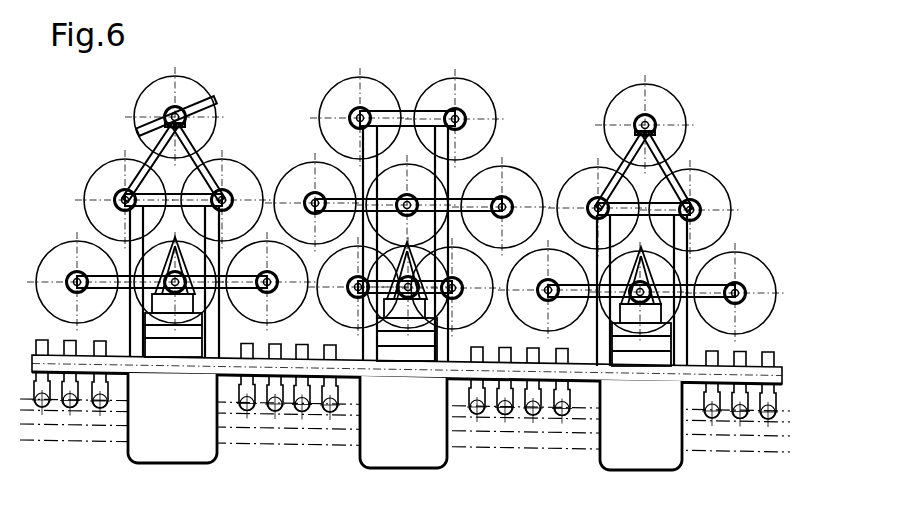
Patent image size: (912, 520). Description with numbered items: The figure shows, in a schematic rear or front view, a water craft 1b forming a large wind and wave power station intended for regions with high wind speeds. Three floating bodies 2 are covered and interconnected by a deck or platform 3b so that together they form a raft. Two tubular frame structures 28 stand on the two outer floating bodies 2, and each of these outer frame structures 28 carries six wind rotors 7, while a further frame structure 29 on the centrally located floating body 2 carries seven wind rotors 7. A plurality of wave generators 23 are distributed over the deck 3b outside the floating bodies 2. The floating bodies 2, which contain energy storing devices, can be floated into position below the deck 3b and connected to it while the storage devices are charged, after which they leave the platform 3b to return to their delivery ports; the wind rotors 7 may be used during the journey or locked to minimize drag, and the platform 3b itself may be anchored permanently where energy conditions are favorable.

The wind rotor 7 is at (197, 105).
The tubular frame structure 28 is at (200, 160).
The frame structure 29 is at (407, 112).
The water craft 1b is at (547, 78).
The deck or platform 3b is at (224, 369).
The floating body 2 is at (372, 435).
The wave generator 23 is at (538, 416).